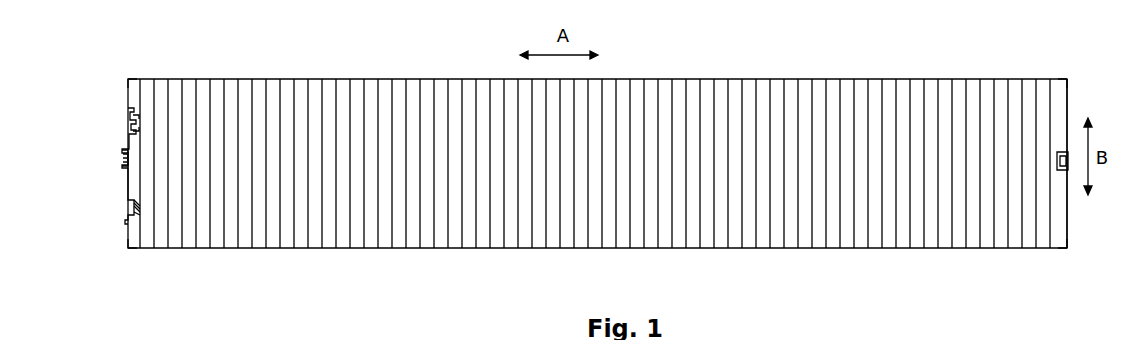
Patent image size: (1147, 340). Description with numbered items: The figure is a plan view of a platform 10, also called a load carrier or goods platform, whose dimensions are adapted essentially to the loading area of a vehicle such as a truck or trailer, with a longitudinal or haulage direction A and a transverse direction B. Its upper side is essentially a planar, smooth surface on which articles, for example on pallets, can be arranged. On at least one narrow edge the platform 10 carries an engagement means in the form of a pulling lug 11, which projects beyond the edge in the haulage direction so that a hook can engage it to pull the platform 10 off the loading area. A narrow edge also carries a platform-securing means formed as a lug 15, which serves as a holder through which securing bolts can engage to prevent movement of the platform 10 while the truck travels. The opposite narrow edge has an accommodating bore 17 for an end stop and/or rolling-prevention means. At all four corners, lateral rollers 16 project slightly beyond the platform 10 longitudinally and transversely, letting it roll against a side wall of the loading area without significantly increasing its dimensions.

The platform 10 is at (600, 225).
The pulling lug 11 is at (140, 177).
The lug 15 is at (138, 137).
The lateral rollers 16 is at (130, 79).
The accommodating bore 17 is at (1062, 122).